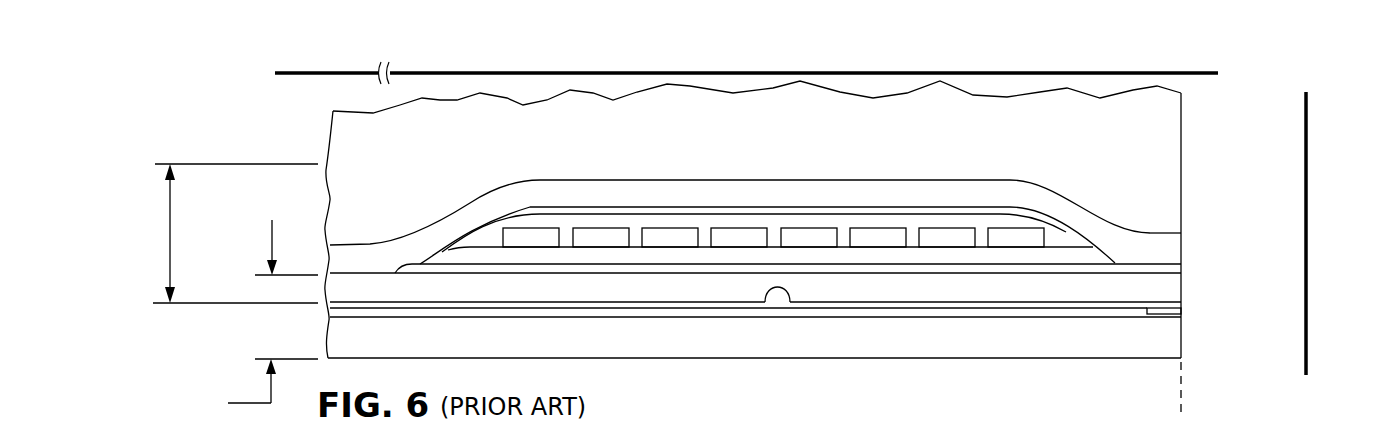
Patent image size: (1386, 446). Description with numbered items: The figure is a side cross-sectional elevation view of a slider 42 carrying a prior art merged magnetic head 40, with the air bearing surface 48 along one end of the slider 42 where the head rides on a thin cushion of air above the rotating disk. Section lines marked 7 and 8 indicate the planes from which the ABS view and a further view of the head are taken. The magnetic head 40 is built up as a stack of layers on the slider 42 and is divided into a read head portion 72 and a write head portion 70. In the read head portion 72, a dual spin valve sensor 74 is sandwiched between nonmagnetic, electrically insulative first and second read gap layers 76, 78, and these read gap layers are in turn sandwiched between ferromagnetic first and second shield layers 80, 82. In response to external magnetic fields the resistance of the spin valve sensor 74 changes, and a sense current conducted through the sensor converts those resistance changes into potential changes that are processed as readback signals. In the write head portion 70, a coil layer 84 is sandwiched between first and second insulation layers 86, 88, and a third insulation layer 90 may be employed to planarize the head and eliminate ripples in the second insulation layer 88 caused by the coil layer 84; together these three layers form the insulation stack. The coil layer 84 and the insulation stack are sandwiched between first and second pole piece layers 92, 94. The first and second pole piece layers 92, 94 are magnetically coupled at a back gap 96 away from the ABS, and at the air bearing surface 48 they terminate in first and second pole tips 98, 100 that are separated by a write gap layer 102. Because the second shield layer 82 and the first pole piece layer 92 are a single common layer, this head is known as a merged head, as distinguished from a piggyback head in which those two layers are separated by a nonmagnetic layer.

The plane 7- 7 is at (1309, 102).
The plane 8- 8 is at (283, 71).
The magnetic head 40 is at (312, 125).
The slider 42 is at (1163, 128).
The air bearing surface 48 is at (1181, 410).
The write head portion 70 is at (222, 233).
The read head portion 72 is at (221, 318).
The dual spin valve sensor 74 is at (1180, 308).
The first read gap layer 76 is at (825, 318).
The second read gap layer 78 is at (765, 302).
The first shield layer 80 is at (907, 342).
The second shield layer 82 is at (1015, 287).
The coil layer 84 is at (805, 232).
The first insulation layer 86 is at (677, 257).
The second insulation layer 88 is at (1060, 238).
The third insulation layer 90 is at (574, 208).
The first pole piece layer 92 is at (755, 360).
The second pole piece layer 94 is at (918, 190).
The back gap 96 is at (367, 273).
The first pole tip 98 is at (1180, 288).
The second pole tip 100 is at (1173, 245).
The write gap layer 102 is at (1178, 265).